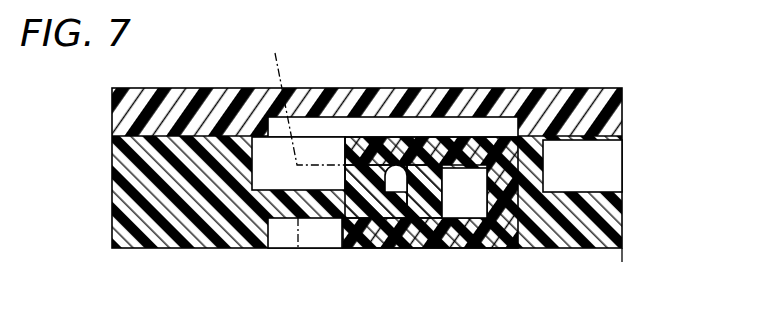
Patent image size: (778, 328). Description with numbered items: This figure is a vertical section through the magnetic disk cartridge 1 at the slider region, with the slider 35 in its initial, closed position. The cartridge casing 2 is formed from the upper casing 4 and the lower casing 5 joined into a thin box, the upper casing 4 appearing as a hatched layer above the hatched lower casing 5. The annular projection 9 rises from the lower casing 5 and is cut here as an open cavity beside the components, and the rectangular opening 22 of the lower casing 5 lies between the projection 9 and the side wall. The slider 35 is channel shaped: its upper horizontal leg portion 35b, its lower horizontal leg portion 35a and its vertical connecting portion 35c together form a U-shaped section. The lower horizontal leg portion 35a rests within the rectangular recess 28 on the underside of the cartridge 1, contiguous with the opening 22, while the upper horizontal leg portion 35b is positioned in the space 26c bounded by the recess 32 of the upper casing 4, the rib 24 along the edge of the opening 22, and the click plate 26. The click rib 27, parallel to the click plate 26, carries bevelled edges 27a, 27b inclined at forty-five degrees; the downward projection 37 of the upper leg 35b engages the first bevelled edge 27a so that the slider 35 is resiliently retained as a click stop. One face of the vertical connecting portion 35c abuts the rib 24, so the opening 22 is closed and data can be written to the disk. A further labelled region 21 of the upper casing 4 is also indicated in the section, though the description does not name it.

The magnetic disk cartridge 1 is at (218, 78).
The cartridge casing 2 is at (82, 179).
The upper casing 4 is at (600, 110).
The lower casing 5 is at (588, 243).
The annular projection 9 is at (298, 163).
The upper housing layer 21 is at (547, 95).
The rectangular opening 22 is at (483, 117).
The rib 24 is at (543, 160).
The click plate 26 is at (432, 137).
The space 26c is at (412, 165).
The click rib 27 is at (372, 168).
The first bevelled edge 27a is at (397, 165).
The bevelled edge 27b is at (352, 168).
The rectangular recess 28 is at (276, 232).
The rectangular recess 32 is at (306, 126).
The slider 35 is at (481, 195).
The lower horizontal leg portion 35a is at (332, 240).
The upper horizontal leg portion 35b is at (455, 168).
The vertical connecting portion 35c is at (448, 195).
The projection 37 is at (345, 178).